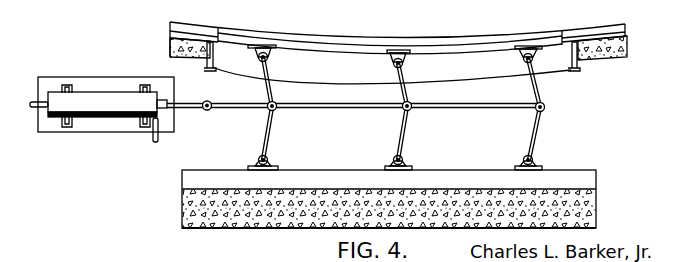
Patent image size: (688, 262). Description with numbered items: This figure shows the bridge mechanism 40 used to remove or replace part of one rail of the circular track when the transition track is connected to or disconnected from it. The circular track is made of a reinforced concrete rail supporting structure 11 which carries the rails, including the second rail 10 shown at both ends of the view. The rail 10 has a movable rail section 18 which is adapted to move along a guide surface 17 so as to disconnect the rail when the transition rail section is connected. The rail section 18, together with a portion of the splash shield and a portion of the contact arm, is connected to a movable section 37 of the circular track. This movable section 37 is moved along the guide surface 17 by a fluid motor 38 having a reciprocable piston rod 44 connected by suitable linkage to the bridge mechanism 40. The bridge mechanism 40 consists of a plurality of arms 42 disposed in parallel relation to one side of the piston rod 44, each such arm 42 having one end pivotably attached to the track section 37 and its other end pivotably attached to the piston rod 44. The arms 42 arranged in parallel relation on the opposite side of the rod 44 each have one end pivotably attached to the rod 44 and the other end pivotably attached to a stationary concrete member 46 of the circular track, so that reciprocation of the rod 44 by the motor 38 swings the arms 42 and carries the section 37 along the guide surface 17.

The second rail 10 is at (210, 26).
The reinforced concrete rail supporting structure 11 is at (168, 50).
The guide surface 17 is at (210, 45).
The movable rail section 18 is at (322, 36).
The movable track section 37 is at (448, 50).
The fluid motor 38 is at (112, 98).
The bridge mechanism 40 is at (477, 28).
The arms 42 is at (270, 88).
The piston rod 44 is at (342, 108).
The stationary concrete member 46 is at (342, 218).